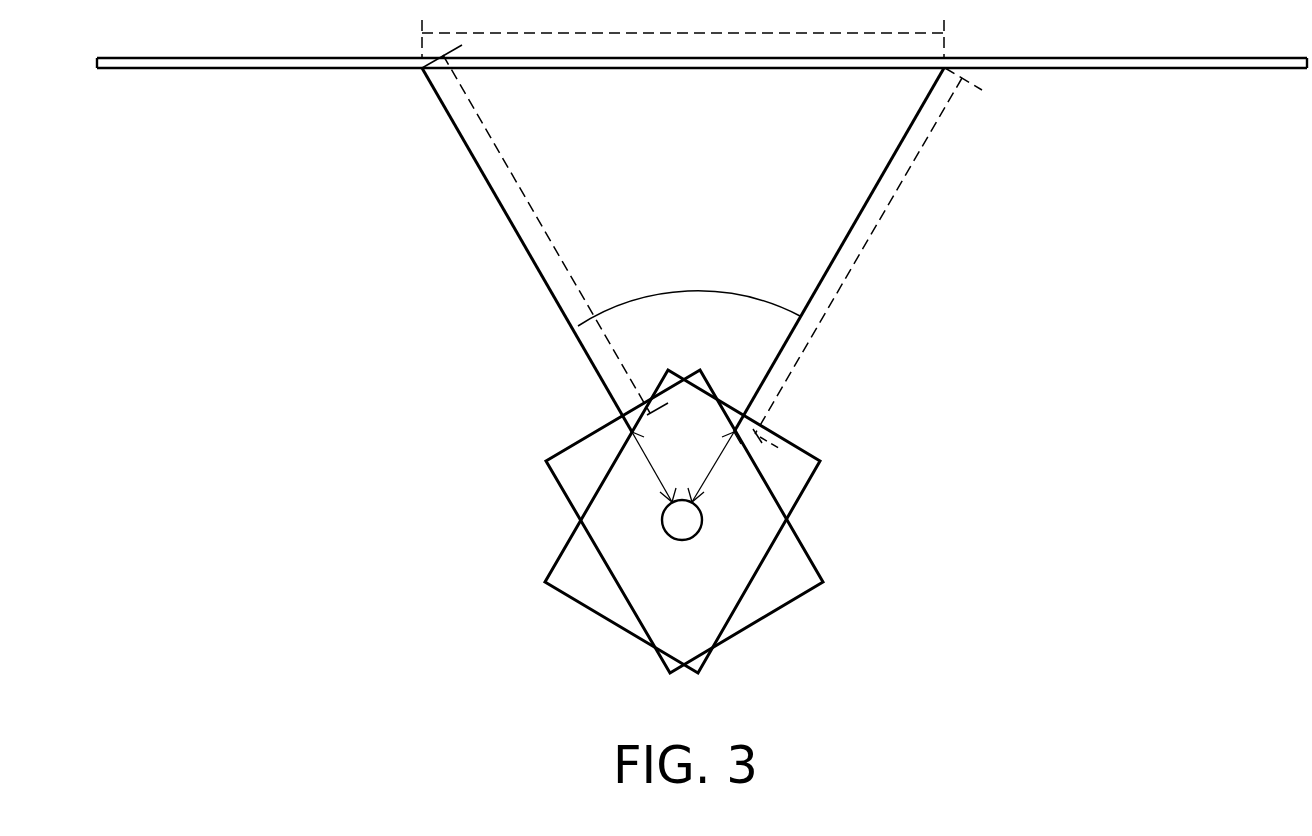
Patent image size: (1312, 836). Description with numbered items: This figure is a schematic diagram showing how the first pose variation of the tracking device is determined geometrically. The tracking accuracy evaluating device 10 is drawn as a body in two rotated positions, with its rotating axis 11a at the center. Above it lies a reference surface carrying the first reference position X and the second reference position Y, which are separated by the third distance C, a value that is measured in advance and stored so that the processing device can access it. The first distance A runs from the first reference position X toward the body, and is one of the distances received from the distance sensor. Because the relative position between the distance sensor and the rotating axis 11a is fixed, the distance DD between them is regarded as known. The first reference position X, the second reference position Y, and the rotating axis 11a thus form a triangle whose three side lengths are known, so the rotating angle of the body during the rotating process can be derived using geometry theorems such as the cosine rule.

The tracking accuracy evaluating device 10 is at (545, 583).
The rotating axis 11a is at (702, 519).
The first reference position X is at (519, 250).
The second reference position Y is at (839, 250).
The first distance A is at (545, 230).
The third distance C is at (683, 28).
The distance between the distance sensor and the rotating axis DD is at (684, 467).